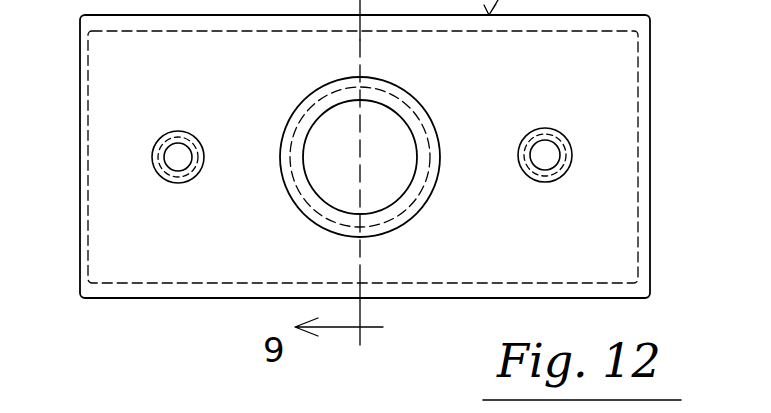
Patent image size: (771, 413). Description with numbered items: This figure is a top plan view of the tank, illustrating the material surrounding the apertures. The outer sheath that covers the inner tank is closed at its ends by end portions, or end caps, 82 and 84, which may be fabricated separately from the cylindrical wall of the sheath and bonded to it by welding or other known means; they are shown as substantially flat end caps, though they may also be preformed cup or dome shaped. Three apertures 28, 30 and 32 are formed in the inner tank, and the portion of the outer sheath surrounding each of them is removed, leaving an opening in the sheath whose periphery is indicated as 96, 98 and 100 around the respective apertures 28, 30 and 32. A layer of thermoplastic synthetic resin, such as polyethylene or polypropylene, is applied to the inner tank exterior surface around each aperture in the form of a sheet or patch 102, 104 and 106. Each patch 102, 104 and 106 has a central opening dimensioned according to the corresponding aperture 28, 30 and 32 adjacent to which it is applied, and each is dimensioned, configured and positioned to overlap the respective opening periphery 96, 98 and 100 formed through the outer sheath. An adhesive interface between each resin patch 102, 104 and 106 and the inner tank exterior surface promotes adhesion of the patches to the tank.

The end portion 82 is at (648, 62).
The end portion 84 is at (79, 63).
The opening periphery 96 is at (316, 108).
The patch 102 is at (304, 149).
The aperture 28 is at (406, 192).
The patch 104 is at (156, 168).
The opening periphery 98 is at (156, 146).
The aperture 30 is at (176, 144).
The patch 106 is at (560, 133).
The opening periphery 100 is at (548, 178).
The aperture 32 is at (545, 168).